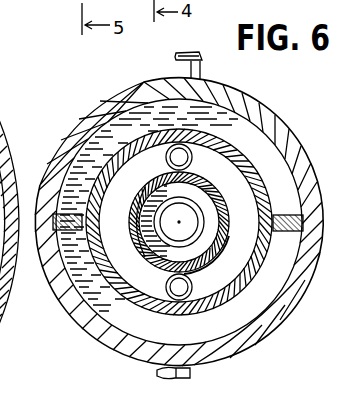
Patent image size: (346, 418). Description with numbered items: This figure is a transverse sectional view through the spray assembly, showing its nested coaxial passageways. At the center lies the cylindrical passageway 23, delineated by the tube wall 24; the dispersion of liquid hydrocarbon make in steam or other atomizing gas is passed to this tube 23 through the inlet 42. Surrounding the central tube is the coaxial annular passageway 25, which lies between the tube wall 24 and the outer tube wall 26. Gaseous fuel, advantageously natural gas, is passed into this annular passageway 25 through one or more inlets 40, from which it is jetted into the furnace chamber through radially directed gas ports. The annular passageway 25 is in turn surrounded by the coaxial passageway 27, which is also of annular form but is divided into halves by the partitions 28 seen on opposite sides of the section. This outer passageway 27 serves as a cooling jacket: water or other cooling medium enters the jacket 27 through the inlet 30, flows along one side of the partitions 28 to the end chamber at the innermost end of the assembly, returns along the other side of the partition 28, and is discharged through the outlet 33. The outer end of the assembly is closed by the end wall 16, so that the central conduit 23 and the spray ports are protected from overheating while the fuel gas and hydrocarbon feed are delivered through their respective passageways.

The end wall 16 is at (122, 98).
The central cylindrical passageway 23 is at (191, 187).
The tube wall 24 is at (196, 181).
The annular passageway 25 is at (108, 200).
The tube wall 26 is at (53, 289).
The coaxial passageway 27 is at (97, 300).
The partitions 28 is at (285, 233).
The inlet 30 is at (196, 369).
The outlet 33 is at (201, 63).
The inlets 40 is at (190, 150).
The inlet 42 is at (193, 217).